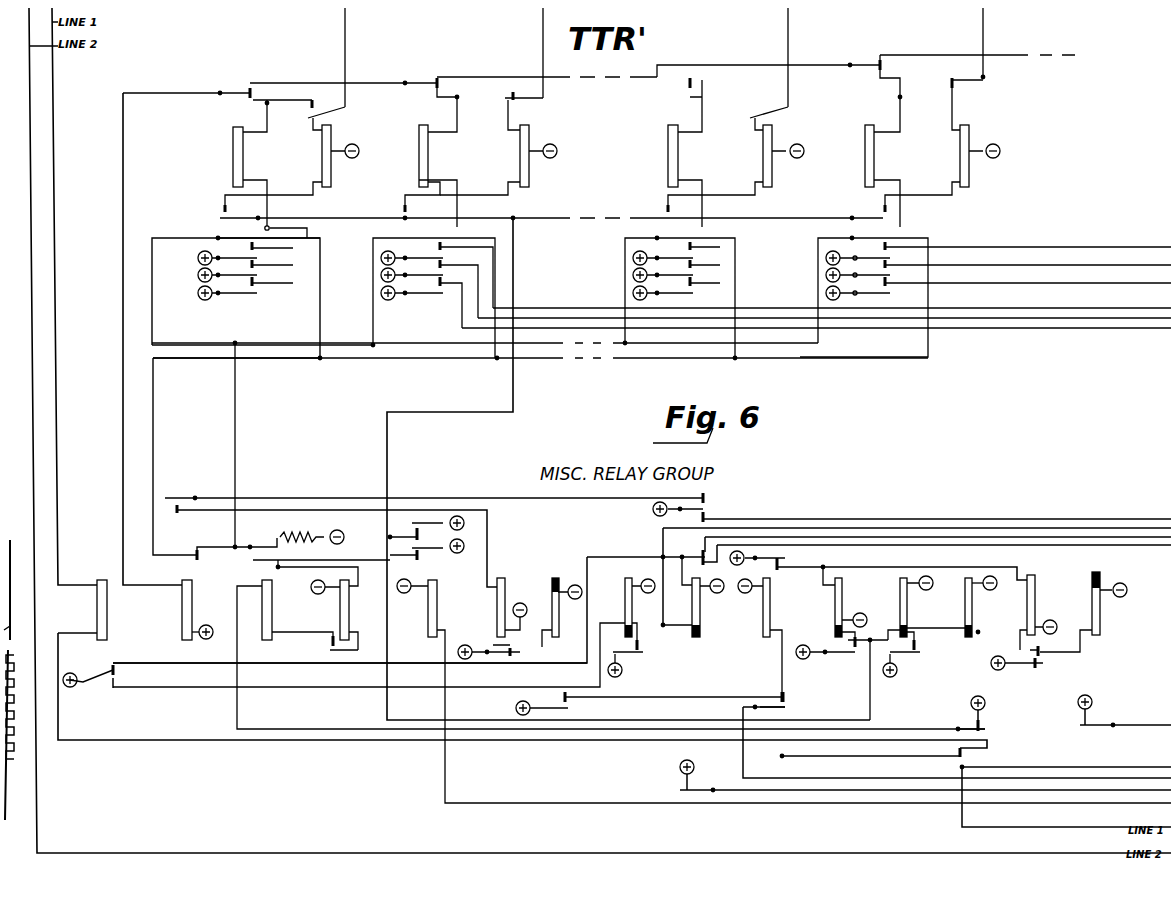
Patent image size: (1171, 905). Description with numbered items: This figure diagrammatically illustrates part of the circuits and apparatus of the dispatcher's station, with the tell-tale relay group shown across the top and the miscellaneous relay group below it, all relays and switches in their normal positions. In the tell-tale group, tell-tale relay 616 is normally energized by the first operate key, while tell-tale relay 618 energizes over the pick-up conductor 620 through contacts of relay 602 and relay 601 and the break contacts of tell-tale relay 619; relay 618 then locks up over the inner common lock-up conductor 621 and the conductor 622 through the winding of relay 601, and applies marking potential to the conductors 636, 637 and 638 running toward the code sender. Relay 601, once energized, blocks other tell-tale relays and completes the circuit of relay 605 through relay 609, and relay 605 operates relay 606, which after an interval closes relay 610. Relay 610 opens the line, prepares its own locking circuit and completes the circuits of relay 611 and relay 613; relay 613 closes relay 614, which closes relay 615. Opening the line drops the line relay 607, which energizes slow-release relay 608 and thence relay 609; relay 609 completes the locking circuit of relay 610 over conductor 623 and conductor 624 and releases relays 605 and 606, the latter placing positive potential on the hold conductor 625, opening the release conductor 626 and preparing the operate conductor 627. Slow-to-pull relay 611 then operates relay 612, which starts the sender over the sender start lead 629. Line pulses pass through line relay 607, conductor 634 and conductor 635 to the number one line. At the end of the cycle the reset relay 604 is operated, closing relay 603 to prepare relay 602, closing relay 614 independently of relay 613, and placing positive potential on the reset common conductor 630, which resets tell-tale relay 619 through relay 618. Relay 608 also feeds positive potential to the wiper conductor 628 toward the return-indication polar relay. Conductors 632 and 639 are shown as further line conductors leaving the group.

The relay 601 is at (192, 608).
The relay 602 is at (272, 595).
The relay 603 is at (340, 617).
The reset relay 604 is at (437, 595).
The relay 605 is at (505, 595).
The relay 606 is at (553, 637).
The line relay 607 is at (107, 608).
The slow-release relay 608 is at (628, 570).
The relay 609 is at (700, 606).
The relay 610 is at (770, 606).
The relay 611 is at (1035, 603).
The relay 612 is at (1100, 613).
The relay 613 is at (842, 603).
The relay 614 is at (907, 603).
The relay 615 is at (972, 603).
The tell-tale relay 616 is at (331, 180).
The tell-tale relay 618 is at (428, 156).
The tell-tale relay 619 is at (528, 132).
The pick-up conductor 620 is at (153, 452).
The inner common lock-up conductor 621 is at (233, 156).
The conductor 622 is at (125, 452).
The conductor 623 is at (1025, 790).
The conductor 624 is at (1040, 778).
The hold conductor 625 is at (1088, 519).
The release conductor 626 is at (1110, 537).
The operate conductor 627 is at (1118, 545).
The wiper conductor 628 is at (1100, 528).
The sender start lead 629 is at (1165, 708).
The reset common conductor 630 is at (554, 218).
The conductor 632 is at (1130, 806).
The conductor 634 is at (1165, 767).
The conductor 635 is at (1118, 750).
The conductor 636 is at (1123, 308).
The conductor 637 is at (1115, 318).
The conductor 638 is at (1110, 328).
The conductor 639 is at (1046, 796).